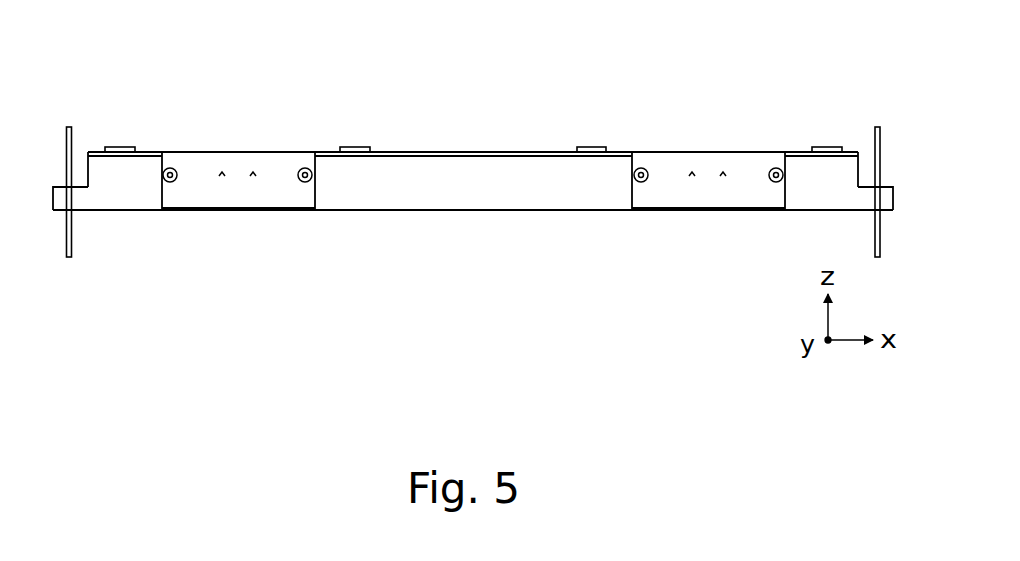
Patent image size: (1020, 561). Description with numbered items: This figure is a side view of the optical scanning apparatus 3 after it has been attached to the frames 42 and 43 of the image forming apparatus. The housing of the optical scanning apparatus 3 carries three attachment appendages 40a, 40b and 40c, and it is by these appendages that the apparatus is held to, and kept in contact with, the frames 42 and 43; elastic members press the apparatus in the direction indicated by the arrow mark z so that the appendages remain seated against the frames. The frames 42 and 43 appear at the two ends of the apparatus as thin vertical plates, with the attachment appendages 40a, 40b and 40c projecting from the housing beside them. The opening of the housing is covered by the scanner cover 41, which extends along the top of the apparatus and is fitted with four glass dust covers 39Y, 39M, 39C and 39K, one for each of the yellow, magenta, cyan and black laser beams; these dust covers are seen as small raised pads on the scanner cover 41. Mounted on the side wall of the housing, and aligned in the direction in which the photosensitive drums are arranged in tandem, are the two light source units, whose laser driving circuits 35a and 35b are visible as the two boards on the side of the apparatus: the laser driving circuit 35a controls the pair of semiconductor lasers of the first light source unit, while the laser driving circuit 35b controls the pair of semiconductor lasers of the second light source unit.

The optical scanning apparatus 3 is at (476, 230).
The laser driving circuit 35a is at (212, 196).
The laser driving circuit 35b is at (688, 200).
The dust cover 39Y is at (125, 147).
The dust cover 39M is at (352, 147).
The dust cover 39C is at (583, 147).
The dust cover 39K is at (820, 147).
The attachment appendage 40a is at (58, 212).
The attachment appendage 40b is at (63, 260).
The attachment appendage 40c is at (896, 212).
The scanner cover 41 is at (425, 150).
The frame 42 is at (73, 127).
The frame 43 is at (876, 127).